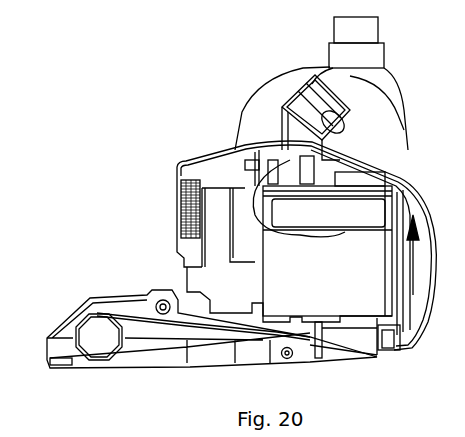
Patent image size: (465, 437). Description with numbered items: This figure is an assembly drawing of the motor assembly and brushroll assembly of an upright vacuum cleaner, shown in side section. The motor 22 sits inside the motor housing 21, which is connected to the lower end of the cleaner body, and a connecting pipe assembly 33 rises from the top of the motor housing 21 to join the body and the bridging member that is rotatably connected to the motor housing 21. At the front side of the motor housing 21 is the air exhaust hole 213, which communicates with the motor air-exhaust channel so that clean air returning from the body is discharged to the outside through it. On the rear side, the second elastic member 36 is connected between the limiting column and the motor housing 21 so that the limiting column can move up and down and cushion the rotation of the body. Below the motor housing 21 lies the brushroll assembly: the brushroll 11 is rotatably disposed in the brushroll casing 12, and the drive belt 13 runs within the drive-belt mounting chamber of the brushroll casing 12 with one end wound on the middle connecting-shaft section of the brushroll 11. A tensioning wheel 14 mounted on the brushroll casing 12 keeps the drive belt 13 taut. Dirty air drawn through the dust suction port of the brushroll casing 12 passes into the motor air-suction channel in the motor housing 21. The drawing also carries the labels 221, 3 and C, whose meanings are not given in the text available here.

The brushroll 11 is at (84, 337).
The brushroll casing 12 is at (70, 312).
The drive belt 13 is at (123, 315).
The tensioning wheel 14 is at (160, 292).
The motor housing 21 is at (287, 244).
The air exhaust hole 213 is at (181, 205).
The motor 22 is at (398, 343).
The support post 221 is at (320, 340).
The connecting pipe assembly 33 is at (281, 92).
The second elastic member 36 is at (436, 233).
The dust collecting unit 3 is at (461, 129).
The air flow passage C is at (398, 113).